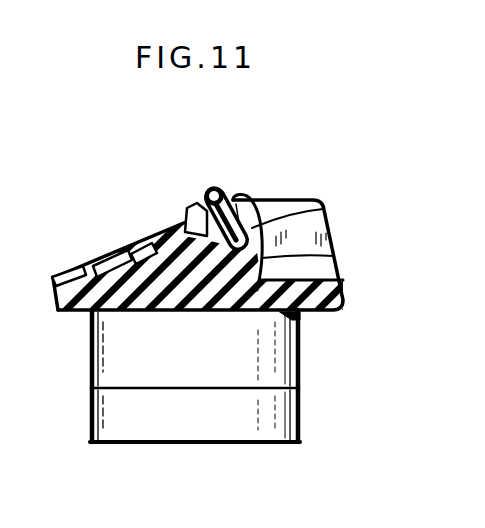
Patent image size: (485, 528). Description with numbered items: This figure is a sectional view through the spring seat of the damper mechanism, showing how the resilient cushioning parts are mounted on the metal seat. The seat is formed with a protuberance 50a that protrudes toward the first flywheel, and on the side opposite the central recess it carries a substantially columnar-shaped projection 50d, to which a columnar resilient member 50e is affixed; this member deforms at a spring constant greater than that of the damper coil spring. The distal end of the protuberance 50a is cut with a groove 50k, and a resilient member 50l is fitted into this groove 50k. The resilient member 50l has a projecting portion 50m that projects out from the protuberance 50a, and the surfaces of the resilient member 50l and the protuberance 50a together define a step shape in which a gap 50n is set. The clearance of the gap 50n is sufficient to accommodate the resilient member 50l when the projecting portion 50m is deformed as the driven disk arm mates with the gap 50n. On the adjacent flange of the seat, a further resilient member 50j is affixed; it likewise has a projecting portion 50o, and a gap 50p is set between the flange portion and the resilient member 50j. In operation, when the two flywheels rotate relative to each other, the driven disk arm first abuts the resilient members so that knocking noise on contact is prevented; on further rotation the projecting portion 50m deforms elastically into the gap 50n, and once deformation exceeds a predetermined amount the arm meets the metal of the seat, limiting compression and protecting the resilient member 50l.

The protuberance 50a is at (334, 256).
The projection 50d is at (300, 366).
The resilient member 50e is at (300, 410).
The resilient member 50j is at (128, 254).
The groove 50k is at (305, 312).
The resilient member 50l is at (323, 209).
The projecting portion 50m is at (214, 188).
The gap 50n is at (197, 212).
The projecting portion 50o is at (146, 252).
The gap 50p is at (91, 264).